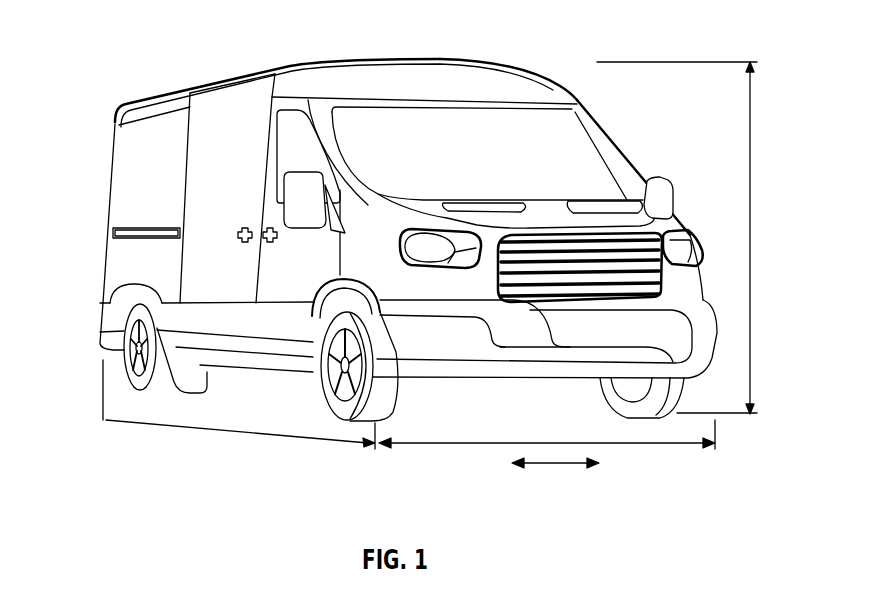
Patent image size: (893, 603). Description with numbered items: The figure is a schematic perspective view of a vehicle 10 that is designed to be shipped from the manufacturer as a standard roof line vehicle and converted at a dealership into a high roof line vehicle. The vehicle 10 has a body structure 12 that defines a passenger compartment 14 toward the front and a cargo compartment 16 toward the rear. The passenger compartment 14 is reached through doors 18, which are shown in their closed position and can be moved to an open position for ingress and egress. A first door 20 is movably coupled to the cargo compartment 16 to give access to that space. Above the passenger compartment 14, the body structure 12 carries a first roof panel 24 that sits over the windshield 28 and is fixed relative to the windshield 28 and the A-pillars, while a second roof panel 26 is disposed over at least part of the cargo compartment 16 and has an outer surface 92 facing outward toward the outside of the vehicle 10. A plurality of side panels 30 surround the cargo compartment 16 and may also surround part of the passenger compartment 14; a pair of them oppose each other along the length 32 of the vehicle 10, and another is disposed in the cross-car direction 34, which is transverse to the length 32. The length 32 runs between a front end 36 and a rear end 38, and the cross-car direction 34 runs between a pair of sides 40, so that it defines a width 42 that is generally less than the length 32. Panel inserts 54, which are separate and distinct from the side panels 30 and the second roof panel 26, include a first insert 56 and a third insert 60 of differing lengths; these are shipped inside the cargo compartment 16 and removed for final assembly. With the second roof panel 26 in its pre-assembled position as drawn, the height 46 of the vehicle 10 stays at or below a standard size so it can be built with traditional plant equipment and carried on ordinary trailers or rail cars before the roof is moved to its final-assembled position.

The vehicle 10 is at (668, 24).
The body structure 12 is at (706, 211).
The passenger compartment 14 is at (582, 138).
The cargo compartment 16 is at (126, 184).
The doors 18 is at (290, 310).
The first door 20 is at (223, 213).
The first roof panel 24 is at (585, 109).
The second roof panel 26 is at (410, 61).
The windshield 28 is at (615, 190).
The side panels 30 is at (117, 280).
The length 32 is at (240, 433).
The cross-car direction 34 is at (557, 463).
The front end 36 is at (715, 304).
The rear end 38 is at (103, 200).
The sides 40 is at (680, 217).
The width 42 is at (547, 443).
The height 46 is at (753, 243).
The panel inserts 54 is at (307, 164).
The first insert 56 is at (125, 118).
The third insert 60 is at (493, 81).
The outer surface 92 is at (373, 59).